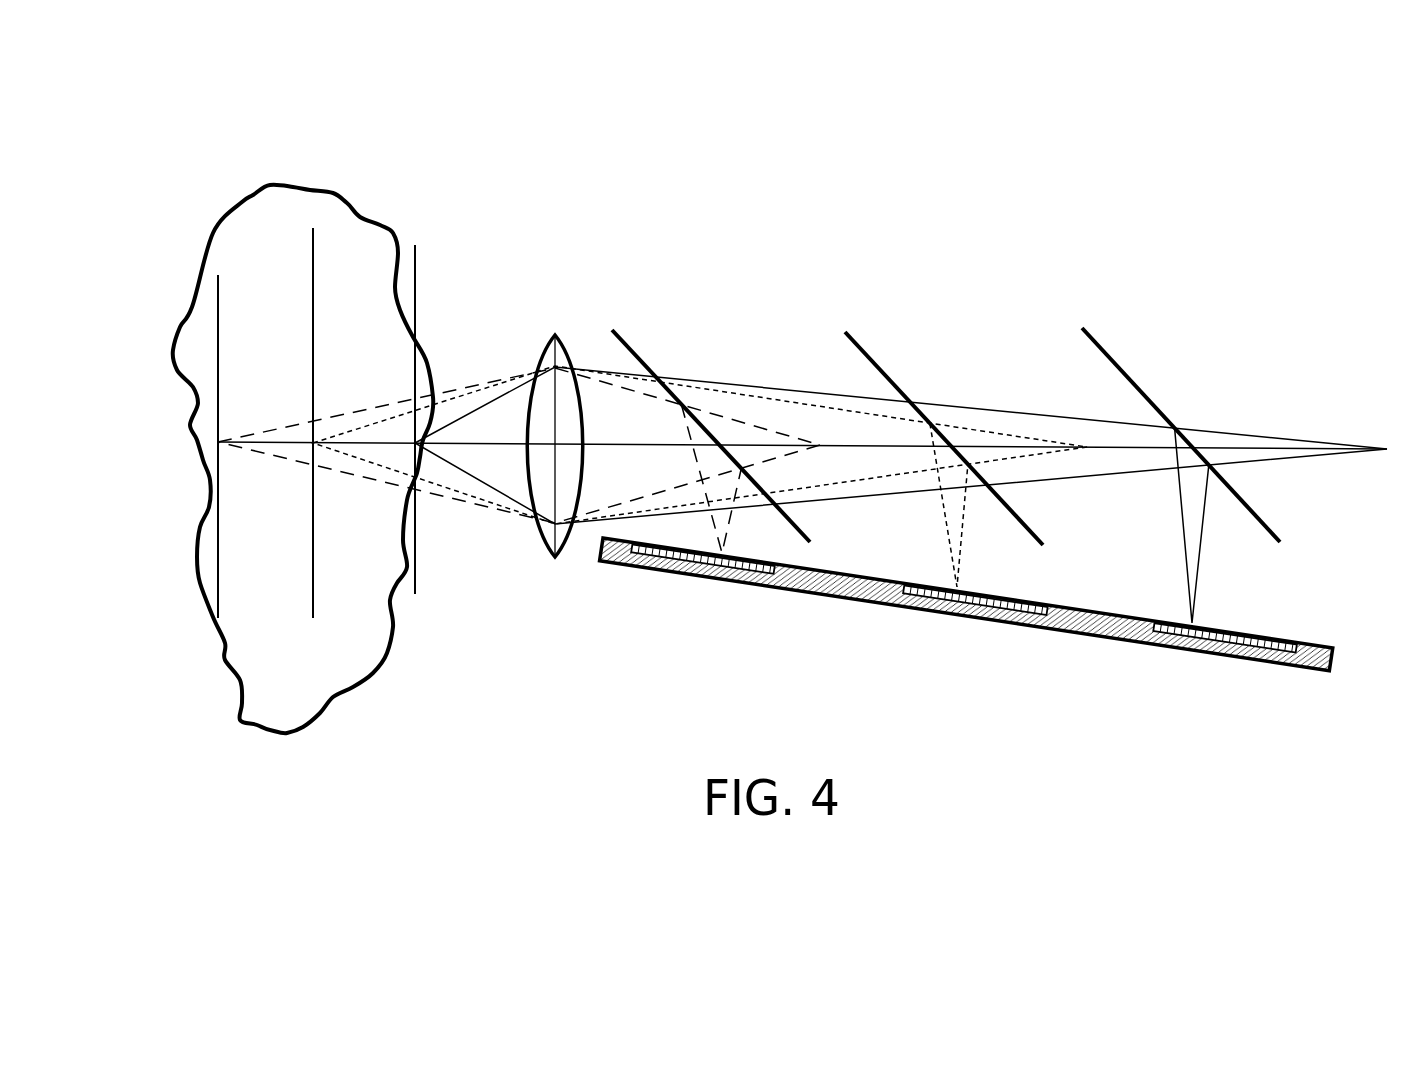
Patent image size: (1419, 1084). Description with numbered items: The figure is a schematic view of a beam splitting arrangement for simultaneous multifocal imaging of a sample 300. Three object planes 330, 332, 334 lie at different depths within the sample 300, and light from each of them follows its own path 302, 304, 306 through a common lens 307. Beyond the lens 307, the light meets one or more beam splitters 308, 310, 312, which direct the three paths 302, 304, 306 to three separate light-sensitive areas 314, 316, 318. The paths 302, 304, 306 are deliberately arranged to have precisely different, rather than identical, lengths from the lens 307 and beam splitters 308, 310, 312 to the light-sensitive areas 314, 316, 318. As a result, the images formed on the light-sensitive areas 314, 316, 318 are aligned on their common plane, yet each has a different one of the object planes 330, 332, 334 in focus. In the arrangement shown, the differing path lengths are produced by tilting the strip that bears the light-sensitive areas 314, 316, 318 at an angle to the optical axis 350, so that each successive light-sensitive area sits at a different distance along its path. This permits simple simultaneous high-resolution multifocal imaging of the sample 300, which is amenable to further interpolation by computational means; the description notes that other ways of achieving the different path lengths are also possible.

The sample 300 is at (437, 707).
The path 302 is at (347, 412).
The path 304 is at (383, 417).
The path 306 is at (480, 405).
The lens 307 is at (545, 537).
The beam splitter 308 is at (643, 353).
The beam splitter 310 is at (867, 350).
The beam splitter 312 is at (1102, 345).
The light-sensitive area 314 is at (690, 556).
The light-sensitive area 316 is at (1030, 602).
The light-sensitive area 318 is at (1250, 633).
The object plane 330 is at (215, 313).
The object plane 332 is at (313, 287).
The object plane 334 is at (415, 275).
The optical axis 350 is at (598, 447).